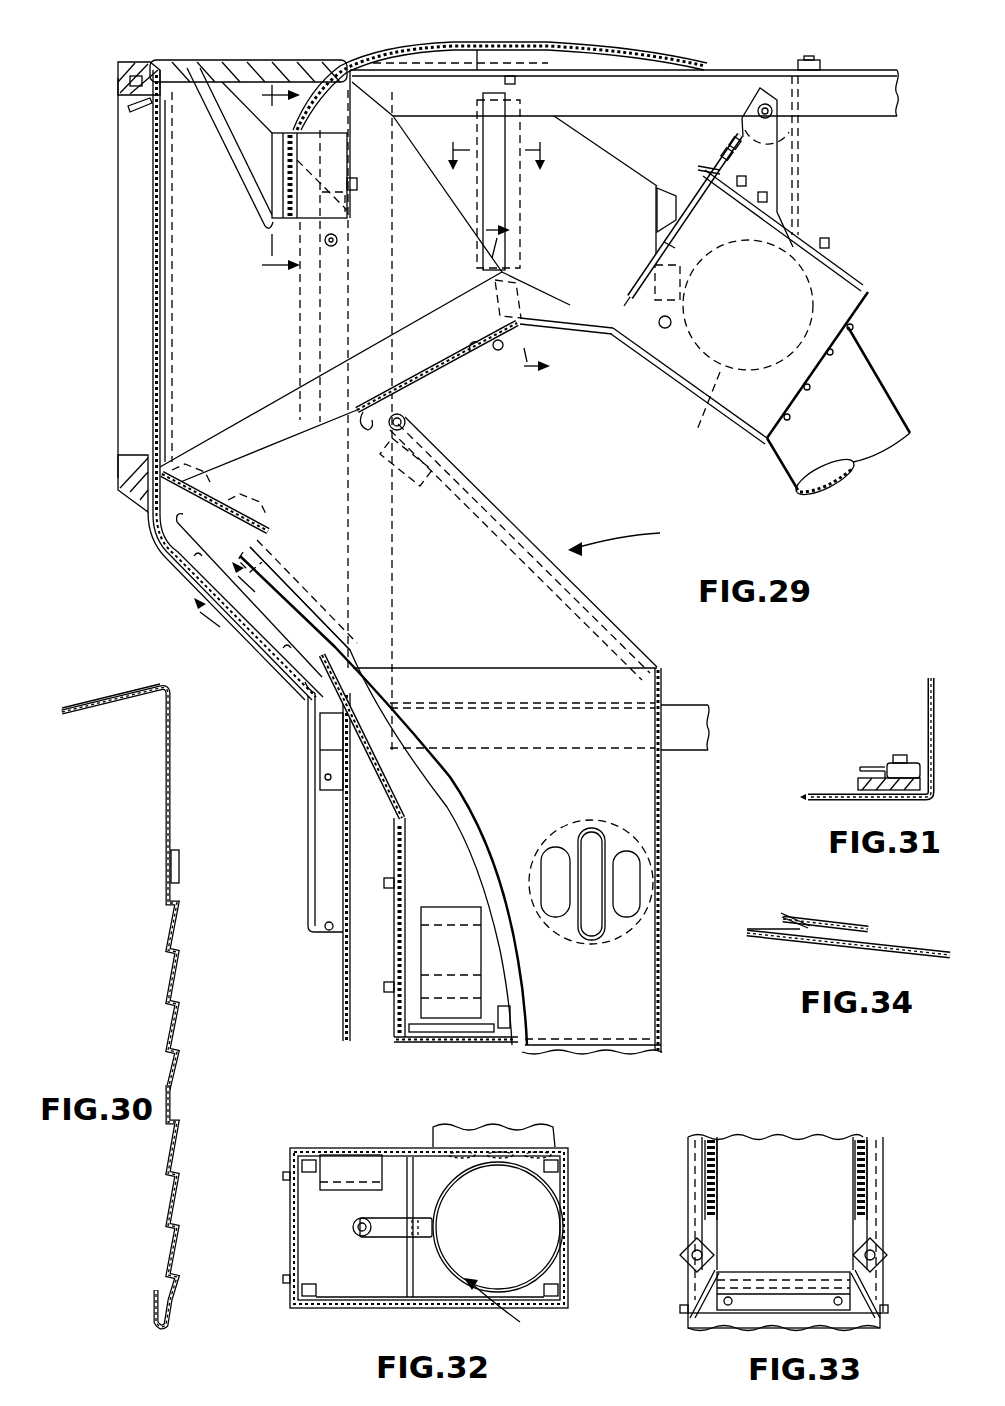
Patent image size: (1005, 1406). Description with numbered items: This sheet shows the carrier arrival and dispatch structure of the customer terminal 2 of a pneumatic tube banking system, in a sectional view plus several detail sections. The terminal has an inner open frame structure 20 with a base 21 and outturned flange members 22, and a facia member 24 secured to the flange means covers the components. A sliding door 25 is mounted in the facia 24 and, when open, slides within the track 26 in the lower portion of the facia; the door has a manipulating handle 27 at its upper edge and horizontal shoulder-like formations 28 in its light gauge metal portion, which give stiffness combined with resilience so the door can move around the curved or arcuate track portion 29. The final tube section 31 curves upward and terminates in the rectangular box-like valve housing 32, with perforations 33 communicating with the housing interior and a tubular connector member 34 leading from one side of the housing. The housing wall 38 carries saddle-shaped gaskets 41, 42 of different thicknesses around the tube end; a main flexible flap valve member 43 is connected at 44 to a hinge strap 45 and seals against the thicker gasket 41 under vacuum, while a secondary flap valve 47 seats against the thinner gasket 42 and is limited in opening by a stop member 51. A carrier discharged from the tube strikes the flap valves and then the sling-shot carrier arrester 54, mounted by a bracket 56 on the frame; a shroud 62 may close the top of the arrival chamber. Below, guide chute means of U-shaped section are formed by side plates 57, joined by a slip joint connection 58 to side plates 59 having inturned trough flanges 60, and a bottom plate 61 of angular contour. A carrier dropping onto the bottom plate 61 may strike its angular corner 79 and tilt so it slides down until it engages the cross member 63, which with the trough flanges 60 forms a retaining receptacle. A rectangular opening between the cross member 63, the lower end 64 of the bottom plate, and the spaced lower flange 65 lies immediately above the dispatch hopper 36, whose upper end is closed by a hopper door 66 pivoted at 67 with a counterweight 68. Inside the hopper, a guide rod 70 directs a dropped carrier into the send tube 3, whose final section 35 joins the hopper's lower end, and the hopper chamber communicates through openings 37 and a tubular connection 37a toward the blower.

In FIG. 29, the customer terminal 2 is at (625, 538).
In FIG. 32, the pneumatic tube 3 is at (502, 1311).
In FIG. 29, the inner open frame structure 20 is at (858, 108).
In FIG. 29, the base 21 is at (343, 1025).
In FIG. 29, the outturned flange members 22 is at (312, 936).
In FIG. 29, the facia member 24 is at (135, 485).
In FIG. 31, the facia member 24 is at (928, 703).
In FIG. 29, the sliding door 25 is at (155, 267).
In FIG. 30, the sliding door 25 is at (163, 982).
In FIG. 31, the track 26 is at (866, 776).
In FIG. 29, the manipulating handle 27 is at (133, 109).
In FIG. 30, the manipulating handle 27 is at (108, 718).
In FIG. 29, the shoulder-like formations 28 is at (155, 347).
In FIG. 30, the shoulder-like formations 28 is at (165, 1035).
In FIG. 29, the curved or arcuate track portion 29 is at (172, 530).
In FIG. 29, the final tube section 31 is at (870, 440).
In FIG. 29, the valve housing 32 is at (845, 295).
In FIG. 33, the valve housing 32 is at (745, 1318).
In FIG. 29, the perforations 33 is at (503, 302).
In FIG. 29, the tubular connector member 34 is at (690, 438).
In FIG. 29, the final section of tube 35 is at (270, 179).
In FIG. 29, the dispatch hopper 36 is at (580, 638).
In FIG. 32, the dispatch hopper 36 is at (385, 1150).
In FIG. 29, the openings 37 is at (560, 905).
In FIG. 32, the openings 37 is at (462, 1150).
In FIG. 29, the tubular connection 37a is at (562, 830).
In FIG. 32, the tubular connection 37a is at (498, 1140).
In FIG. 29, the housing wall 38 is at (680, 390).
In FIG. 29, the gasket 41 is at (640, 290).
In FIG. 29, the gasket 42 is at (697, 210).
In FIG. 29, the main flexible flap valve member 43 is at (650, 282).
In FIG. 33, the main flexible flap valve member 43 is at (804, 1209).
In FIG. 29, the connection 44 is at (723, 155).
In FIG. 29, the hinge strap 45 is at (767, 167).
In FIG. 29, the secondary flap valve 47 is at (680, 240).
In FIG. 29, the stop member 51 is at (700, 168).
In FIG. 29, the carrier arrester 54 is at (297, 166).
In FIG. 29, the bracket 56 is at (275, 166).
In FIG. 29, the side plates 57 is at (597, 201).
In FIG. 34, the side plates 57 is at (937, 958).
In FIG. 33, the side plates 57 is at (703, 1150).
In FIG. 29, the slip joint connection 58 is at (482, 191).
In FIG. 34, the slip joint connection 58 is at (858, 930).
In FIG. 33, the slip joint connection 58 is at (718, 1162).
In FIG. 29, the side plates 59 is at (232, 327).
In FIG. 34, the side plates 59 is at (765, 940).
In FIG. 33, the side plates 59 is at (706, 1197).
In FIG. 29, the inturned trough flanges 60 is at (240, 450).
In FIG. 29, the bottom plate 61 is at (472, 352).
In FIG. 29, the shroud 62 is at (455, 42).
In FIG. 29, the cross member 63 is at (242, 520).
In FIG. 29, the lower end of bottom plate 64 is at (367, 425).
In FIG. 29, the lower flange 65 is at (313, 467).
In FIG. 29, the hopper door 66 is at (280, 537).
In FIG. 29, the pivot 67 is at (407, 422).
In FIG. 29, the counterweight 68 is at (432, 472).
In FIG. 29, the guide rod 70 is at (450, 790).
In FIG. 32, the guide rod 70 is at (386, 1232).
In FIG. 29, the angular corner 79 is at (548, 312).
In FIG. 33, the angular corner 79 is at (778, 1273).